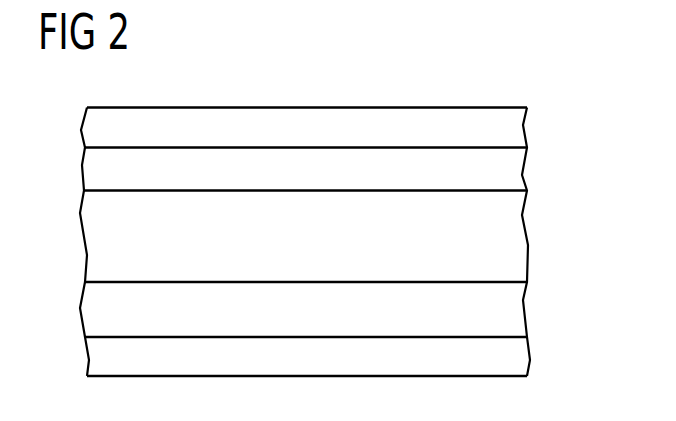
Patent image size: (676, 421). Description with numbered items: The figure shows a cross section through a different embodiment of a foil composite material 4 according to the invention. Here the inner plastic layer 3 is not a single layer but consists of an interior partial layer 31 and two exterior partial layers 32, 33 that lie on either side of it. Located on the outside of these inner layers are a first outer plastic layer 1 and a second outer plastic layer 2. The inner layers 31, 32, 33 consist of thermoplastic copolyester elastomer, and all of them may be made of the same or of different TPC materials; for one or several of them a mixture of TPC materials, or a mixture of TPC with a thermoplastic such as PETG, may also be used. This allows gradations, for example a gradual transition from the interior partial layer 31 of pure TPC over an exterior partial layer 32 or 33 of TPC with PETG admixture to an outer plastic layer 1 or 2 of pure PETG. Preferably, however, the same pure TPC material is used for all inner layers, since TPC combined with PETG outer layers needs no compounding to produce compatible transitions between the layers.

The first outer plastic layer 1 is at (518, 124).
The second outer plastic layer 2 is at (518, 362).
The inner plastic layer 3 is at (306, 244).
The interior partial layer 31 is at (518, 246).
The exterior partial layer 32 is at (518, 176).
The exterior partial layer 33 is at (513, 299).
The foil composite material 4 is at (306, 203).